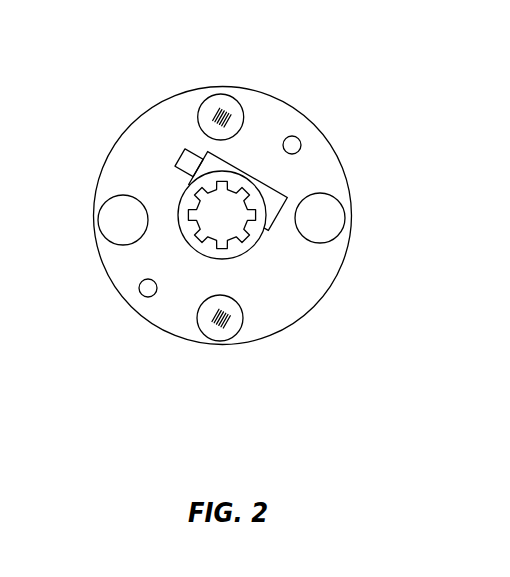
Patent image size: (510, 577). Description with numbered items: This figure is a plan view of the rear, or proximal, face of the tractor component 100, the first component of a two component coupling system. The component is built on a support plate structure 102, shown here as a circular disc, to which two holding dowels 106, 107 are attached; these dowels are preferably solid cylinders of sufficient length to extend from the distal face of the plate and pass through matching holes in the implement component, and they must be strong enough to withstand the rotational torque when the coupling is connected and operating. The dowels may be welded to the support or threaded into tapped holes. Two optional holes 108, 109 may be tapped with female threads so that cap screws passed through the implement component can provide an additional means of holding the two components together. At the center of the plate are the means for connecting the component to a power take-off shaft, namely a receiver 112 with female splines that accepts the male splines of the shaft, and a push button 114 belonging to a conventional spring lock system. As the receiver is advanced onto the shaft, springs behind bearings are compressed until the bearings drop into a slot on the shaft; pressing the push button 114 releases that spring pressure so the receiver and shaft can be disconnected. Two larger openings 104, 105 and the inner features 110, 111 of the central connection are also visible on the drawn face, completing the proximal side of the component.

The tractor component 100 is at (138, 56).
The support plate structure 102 is at (289, 329).
The right mounting hole 104 is at (320, 218).
The left mounting hole 105 is at (123, 220).
The holding dowel 106 is at (220, 332).
The holding dowel 107 is at (220, 103).
The optional hole 108 is at (150, 288).
The optional hole 109 is at (293, 144).
The central bore 110 is at (205, 220).
The splined gear 111 is at (243, 245).
The receiver 112 is at (241, 169).
The push button 114 is at (175, 160).